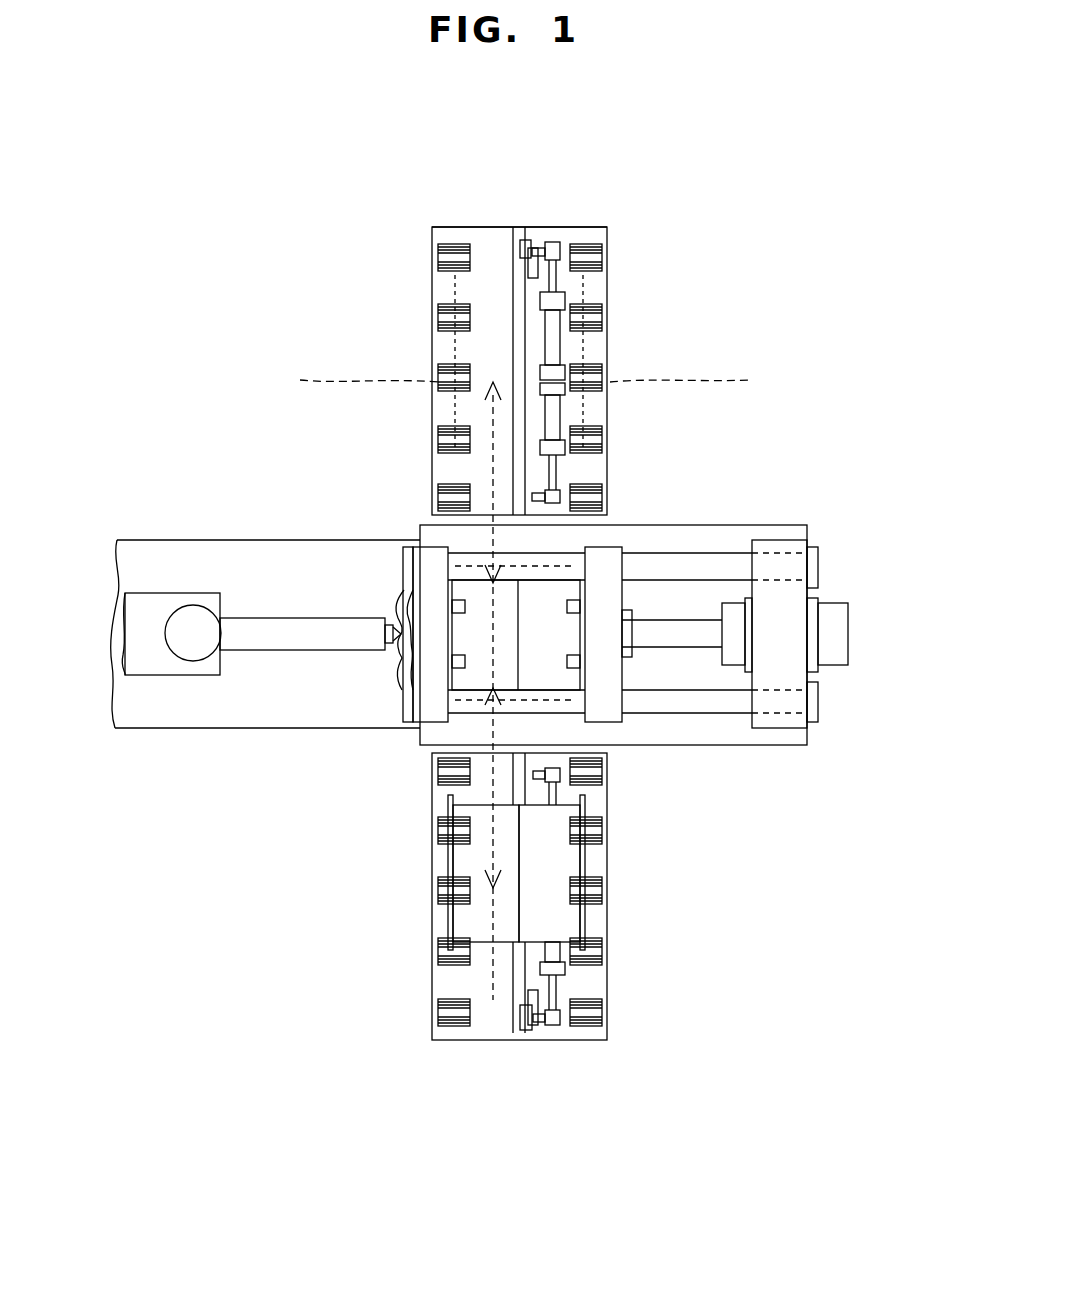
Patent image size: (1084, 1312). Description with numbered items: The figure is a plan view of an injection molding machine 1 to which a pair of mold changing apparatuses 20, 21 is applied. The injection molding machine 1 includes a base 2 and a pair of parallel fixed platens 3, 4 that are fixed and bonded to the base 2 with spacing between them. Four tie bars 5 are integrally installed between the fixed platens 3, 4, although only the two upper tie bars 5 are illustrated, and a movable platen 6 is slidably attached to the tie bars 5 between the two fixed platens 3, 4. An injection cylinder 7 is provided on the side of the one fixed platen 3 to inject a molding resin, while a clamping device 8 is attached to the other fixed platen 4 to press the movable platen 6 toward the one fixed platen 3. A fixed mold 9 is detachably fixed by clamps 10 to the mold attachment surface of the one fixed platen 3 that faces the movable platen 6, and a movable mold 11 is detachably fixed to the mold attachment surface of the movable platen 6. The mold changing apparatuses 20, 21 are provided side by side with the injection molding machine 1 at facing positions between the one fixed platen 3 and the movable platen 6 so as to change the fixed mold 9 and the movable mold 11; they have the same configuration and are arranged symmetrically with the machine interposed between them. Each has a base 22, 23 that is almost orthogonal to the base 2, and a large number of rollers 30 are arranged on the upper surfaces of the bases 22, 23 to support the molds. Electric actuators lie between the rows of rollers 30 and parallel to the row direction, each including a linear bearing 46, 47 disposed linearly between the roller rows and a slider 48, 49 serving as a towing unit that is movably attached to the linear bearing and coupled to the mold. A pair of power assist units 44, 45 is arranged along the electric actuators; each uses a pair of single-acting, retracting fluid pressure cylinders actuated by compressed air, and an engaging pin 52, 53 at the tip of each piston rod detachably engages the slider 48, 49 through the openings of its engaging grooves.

The injection molding machine 1 is at (795, 488).
The base 2 is at (125, 715).
The fixed platen 3 is at (430, 600).
The fixed platen 4 is at (778, 712).
The tie bar 5 is at (820, 560).
The movable platen 6 is at (620, 545).
The injection cylinder 7 is at (240, 625).
The clamping device 8 is at (850, 635).
The fixed mold 9 is at (455, 915).
The clamp 10 is at (405, 640).
The movable mold 11 is at (555, 915).
The mold changing apparatus 20 is at (603, 218).
The mold changing apparatus 21 is at (608, 1046).
The base 22 is at (488, 238).
The base 23 is at (460, 1095).
The roller 30 is at (438, 262).
The power assist unit 44 is at (585, 355).
The power assist unit 45 is at (565, 950).
The linear bearing 46 is at (520, 245).
The linear bearing 47 is at (520, 1000).
The slider 48 is at (528, 270).
The slider 49 is at (525, 1032).
The engaging pin 52 is at (545, 248).
The engaging pin 53 is at (560, 1025).